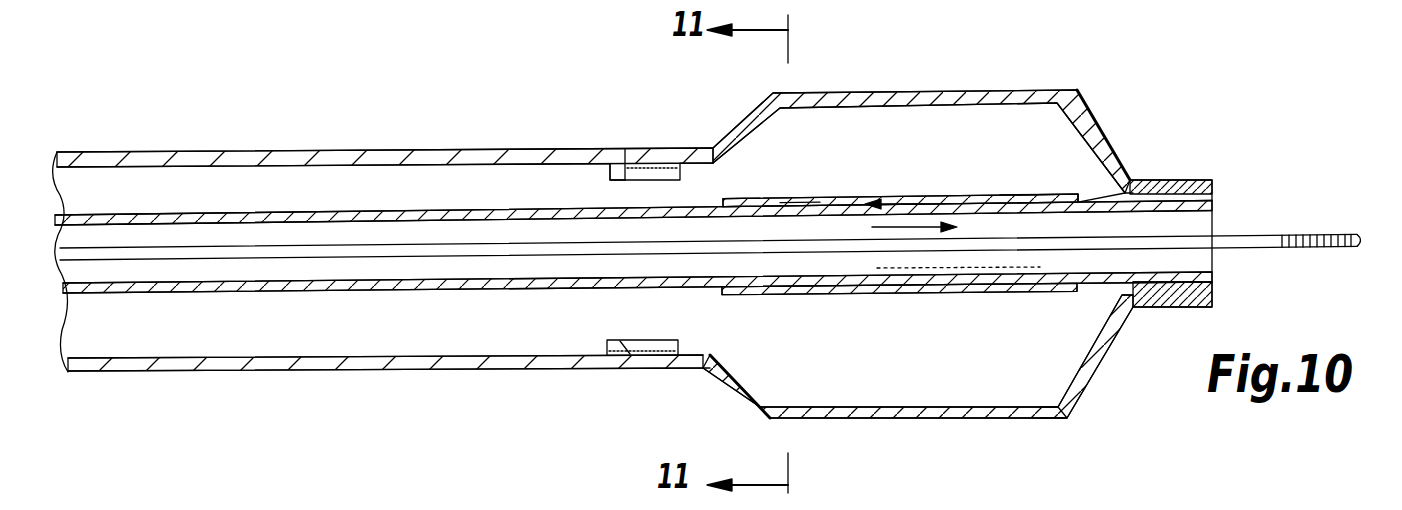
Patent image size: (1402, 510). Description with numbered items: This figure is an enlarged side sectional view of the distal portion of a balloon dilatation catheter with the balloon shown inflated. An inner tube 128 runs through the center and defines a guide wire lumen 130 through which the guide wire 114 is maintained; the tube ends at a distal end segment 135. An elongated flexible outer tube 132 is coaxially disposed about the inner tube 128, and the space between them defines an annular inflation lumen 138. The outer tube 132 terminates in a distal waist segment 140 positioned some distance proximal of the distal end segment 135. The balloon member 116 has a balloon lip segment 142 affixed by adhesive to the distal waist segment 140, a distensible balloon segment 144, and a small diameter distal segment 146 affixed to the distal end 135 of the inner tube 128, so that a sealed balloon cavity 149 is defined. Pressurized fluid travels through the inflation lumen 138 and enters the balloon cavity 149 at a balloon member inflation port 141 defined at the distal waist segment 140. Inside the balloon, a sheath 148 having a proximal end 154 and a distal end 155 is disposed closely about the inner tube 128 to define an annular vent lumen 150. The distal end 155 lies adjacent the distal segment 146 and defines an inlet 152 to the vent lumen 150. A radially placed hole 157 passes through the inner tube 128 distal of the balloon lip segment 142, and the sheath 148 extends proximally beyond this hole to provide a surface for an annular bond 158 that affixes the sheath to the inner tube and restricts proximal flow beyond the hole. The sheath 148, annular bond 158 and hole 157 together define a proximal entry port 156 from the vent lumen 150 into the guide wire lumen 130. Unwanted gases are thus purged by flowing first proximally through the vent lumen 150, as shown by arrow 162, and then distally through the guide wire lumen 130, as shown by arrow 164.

The guide wire 114 is at (1270, 250).
The balloon member 116 is at (922, 86).
The inner tube 128 is at (278, 295).
The guide wire lumen 130 is at (269, 230).
The outer tube 132 is at (103, 165).
The distal end segment 135 is at (1214, 195).
The inflation lumen 138 is at (178, 180).
The distal waist segment 140 is at (659, 163).
The balloon member inflation port 141 is at (622, 193).
The balloon lip segment 142 is at (653, 368).
The distensible balloon segment 144 is at (1043, 418).
The distal segment 146 is at (1151, 302).
The sheath 148 is at (910, 198).
The balloon cavity 149 is at (1002, 357).
The vent lumen 150 is at (1097, 143).
The inlet 152 is at (1085, 207).
The proximal end 154 is at (740, 212).
The distal end 155 is at (1078, 204).
The proximal entry port 156 is at (787, 226).
The radially placed hole 157 is at (793, 213).
The annular bond 158 is at (738, 213).
The arrow 162 is at (892, 200).
The arrow 164 is at (895, 231).